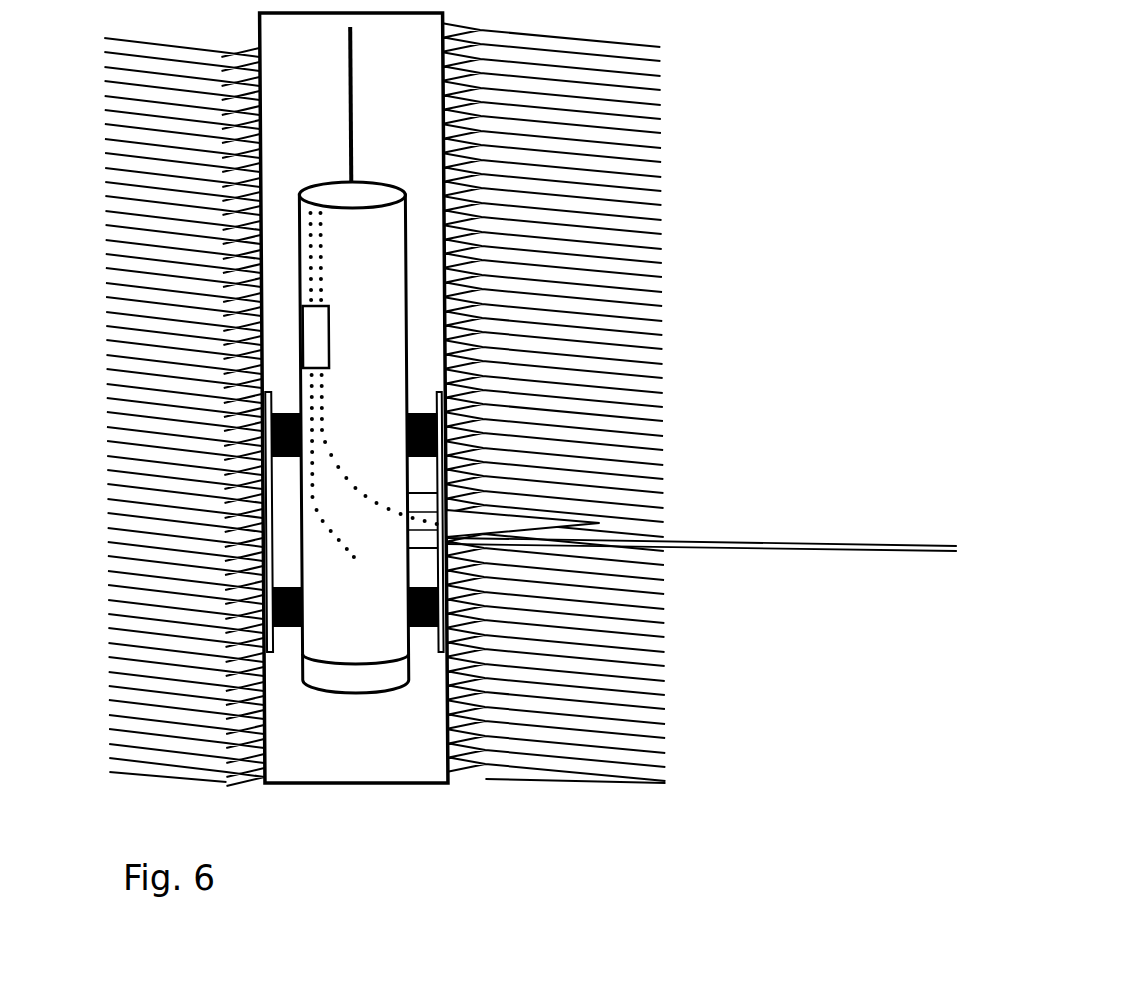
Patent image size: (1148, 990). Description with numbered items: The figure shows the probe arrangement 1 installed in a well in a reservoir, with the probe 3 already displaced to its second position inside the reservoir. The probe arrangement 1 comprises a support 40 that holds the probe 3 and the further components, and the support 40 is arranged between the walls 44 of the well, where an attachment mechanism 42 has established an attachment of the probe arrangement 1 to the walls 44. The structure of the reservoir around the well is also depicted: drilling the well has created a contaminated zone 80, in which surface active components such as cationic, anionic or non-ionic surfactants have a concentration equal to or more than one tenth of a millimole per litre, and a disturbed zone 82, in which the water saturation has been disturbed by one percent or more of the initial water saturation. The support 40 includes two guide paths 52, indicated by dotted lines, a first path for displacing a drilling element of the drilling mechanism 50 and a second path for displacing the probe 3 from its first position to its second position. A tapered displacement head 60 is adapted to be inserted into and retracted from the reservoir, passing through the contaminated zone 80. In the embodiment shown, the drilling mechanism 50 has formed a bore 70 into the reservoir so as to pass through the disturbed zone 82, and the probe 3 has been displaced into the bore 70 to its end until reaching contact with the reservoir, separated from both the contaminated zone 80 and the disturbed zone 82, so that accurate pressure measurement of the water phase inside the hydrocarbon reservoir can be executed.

The probe arrangement 1 is at (499, 393).
The probe 3 is at (957, 547).
The support 40 is at (389, 410).
The attachment mechanism 42 is at (412, 493).
The walls of the well 44 is at (521, 493).
The contaminated zone 80 is at (447, 393).
The drilling mechanism 50 is at (313, 340).
The guide paths 52 is at (310, 262).
The tapered displacement head 60 is at (540, 523).
The bore 70 is at (702, 515).
The disturbed zone 82 is at (570, 442).